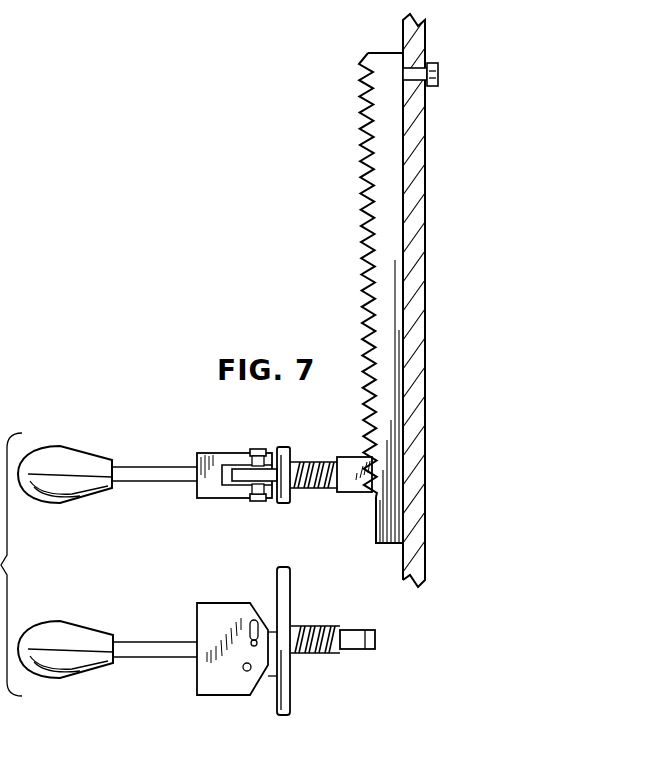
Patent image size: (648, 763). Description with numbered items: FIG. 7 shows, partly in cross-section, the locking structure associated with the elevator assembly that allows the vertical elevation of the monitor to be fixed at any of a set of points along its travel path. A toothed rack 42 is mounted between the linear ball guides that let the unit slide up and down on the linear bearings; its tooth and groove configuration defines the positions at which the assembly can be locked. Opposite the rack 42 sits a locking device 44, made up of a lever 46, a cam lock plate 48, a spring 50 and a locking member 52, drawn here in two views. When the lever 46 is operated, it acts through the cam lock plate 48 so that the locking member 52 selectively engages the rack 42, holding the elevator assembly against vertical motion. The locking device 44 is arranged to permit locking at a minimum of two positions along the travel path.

The rack 42 is at (342, 192).
The locking device 44 is at (246, 551).
The lever 46 is at (52, 447).
The cam lock plate 48 is at (213, 453).
The spring 50 is at (300, 490).
The locking member 52 is at (352, 493).